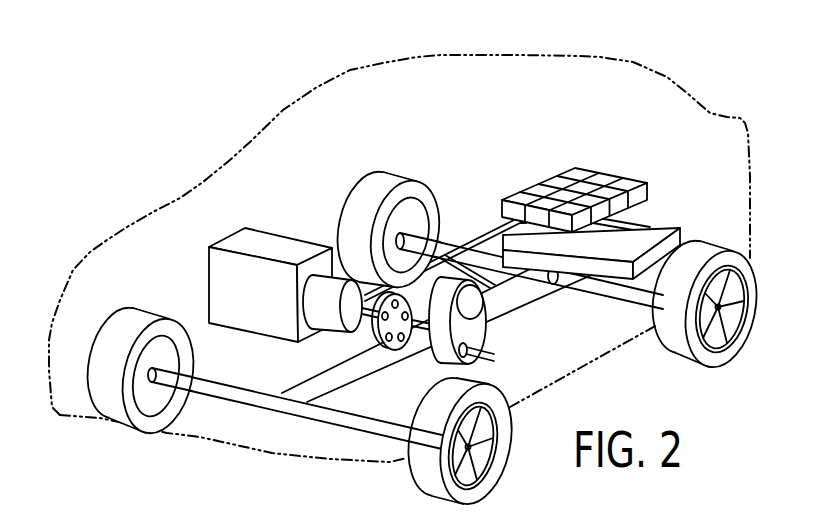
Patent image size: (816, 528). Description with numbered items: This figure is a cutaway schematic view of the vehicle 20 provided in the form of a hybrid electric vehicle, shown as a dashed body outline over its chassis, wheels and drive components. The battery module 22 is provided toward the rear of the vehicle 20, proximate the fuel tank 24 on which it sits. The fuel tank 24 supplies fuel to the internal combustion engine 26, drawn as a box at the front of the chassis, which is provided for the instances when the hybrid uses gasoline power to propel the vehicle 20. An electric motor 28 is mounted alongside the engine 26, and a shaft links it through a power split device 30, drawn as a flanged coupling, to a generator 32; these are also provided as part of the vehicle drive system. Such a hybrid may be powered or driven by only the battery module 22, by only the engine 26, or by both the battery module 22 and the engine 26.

The vehicle 20 is at (684, 68).
The battery module 22 is at (554, 160).
The fuel tank 24 is at (670, 235).
The internal combustion engine 26 is at (240, 240).
The electric motor 28 is at (322, 292).
The power split device 30 is at (377, 345).
The generator 32 is at (497, 347).